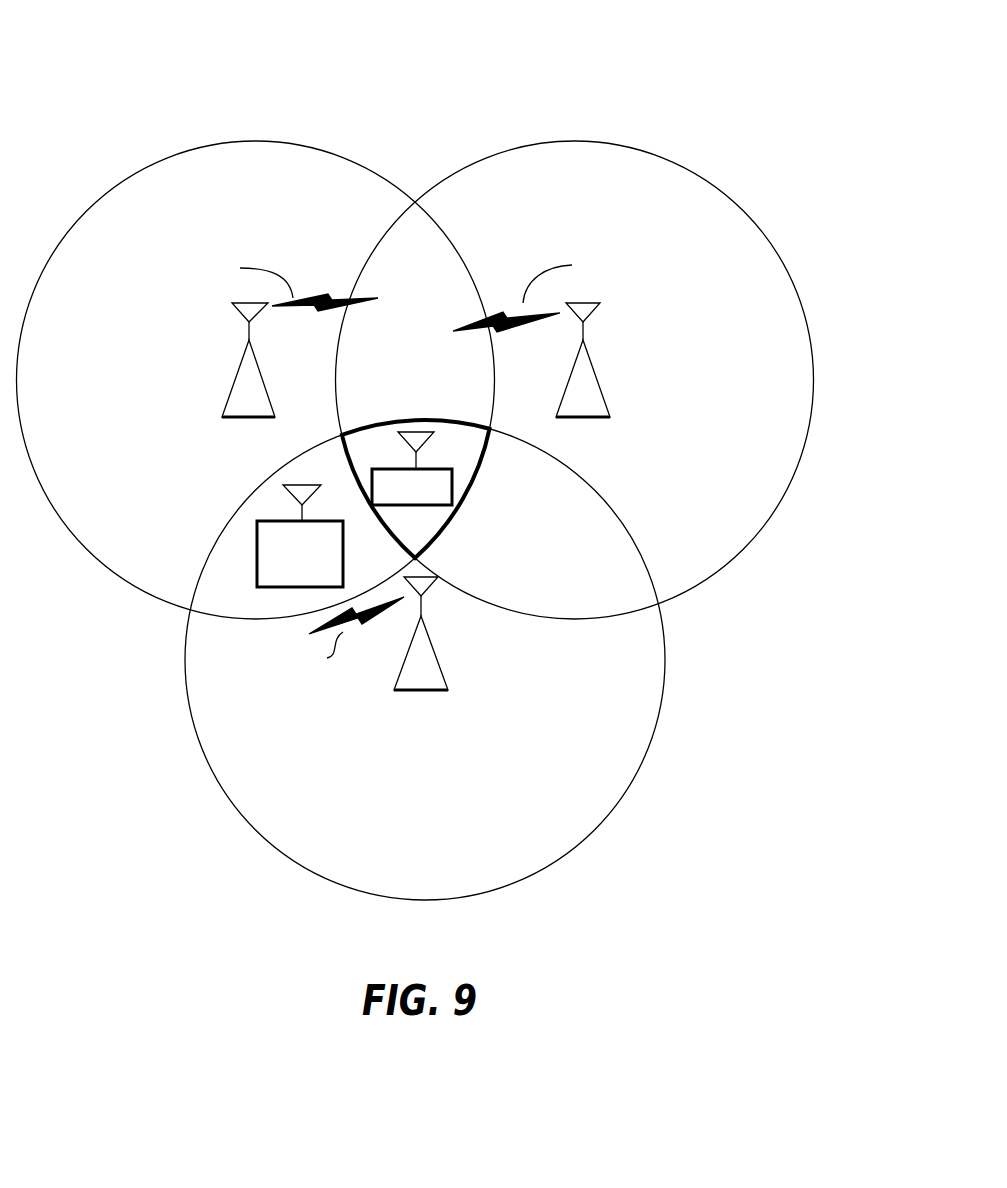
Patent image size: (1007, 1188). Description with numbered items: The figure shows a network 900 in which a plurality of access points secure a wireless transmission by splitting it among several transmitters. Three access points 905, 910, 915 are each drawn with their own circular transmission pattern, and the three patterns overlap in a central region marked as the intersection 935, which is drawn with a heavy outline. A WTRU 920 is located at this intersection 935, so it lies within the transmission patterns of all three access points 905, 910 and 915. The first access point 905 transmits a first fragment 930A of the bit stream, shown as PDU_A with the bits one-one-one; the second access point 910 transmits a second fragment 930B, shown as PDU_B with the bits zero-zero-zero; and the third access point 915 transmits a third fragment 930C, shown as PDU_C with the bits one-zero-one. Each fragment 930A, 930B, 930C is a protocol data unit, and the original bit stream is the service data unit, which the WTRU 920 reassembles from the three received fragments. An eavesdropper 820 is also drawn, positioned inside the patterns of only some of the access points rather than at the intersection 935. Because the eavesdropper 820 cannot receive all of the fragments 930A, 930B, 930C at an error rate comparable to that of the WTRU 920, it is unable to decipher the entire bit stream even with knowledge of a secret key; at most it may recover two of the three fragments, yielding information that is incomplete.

The network 900 is at (720, 44).
The access point 905 is at (233, 386).
The access point 910 is at (602, 388).
The access point 915 is at (440, 668).
The WTRU 920 is at (454, 483).
The eavesdropper 820 is at (257, 540).
The first fragment 930A is at (305, 308).
The second fragment 930B is at (533, 316).
The third fragment 930C is at (355, 626).
The intersection 935 is at (414, 528).